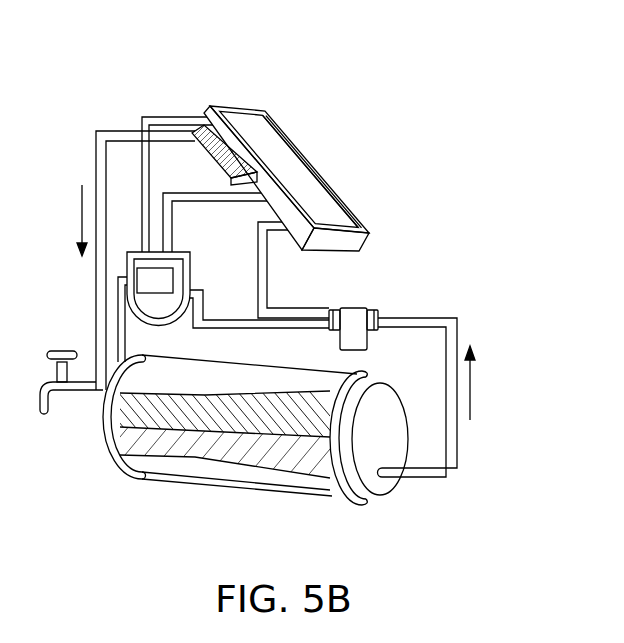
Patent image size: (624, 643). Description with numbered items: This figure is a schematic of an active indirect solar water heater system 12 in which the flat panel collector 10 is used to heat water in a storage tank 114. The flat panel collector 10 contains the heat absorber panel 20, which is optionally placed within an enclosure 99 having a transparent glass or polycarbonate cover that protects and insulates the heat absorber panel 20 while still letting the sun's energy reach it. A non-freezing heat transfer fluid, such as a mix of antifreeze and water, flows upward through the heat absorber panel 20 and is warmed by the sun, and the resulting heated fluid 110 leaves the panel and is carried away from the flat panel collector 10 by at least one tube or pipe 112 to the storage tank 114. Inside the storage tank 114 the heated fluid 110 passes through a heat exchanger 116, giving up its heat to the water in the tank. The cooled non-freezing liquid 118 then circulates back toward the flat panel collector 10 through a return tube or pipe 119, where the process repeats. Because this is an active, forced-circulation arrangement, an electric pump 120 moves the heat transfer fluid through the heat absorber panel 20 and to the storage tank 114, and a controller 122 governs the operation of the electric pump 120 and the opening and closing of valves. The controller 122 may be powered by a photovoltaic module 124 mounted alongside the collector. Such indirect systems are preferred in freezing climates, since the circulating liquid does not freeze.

The flat panel collector 10 is at (293, 125).
The solar water heater system 12 is at (332, 120).
The heat absorber panel 20 is at (328, 186).
The enclosure 99 is at (308, 157).
The heated fluid 110 is at (172, 135).
The tube or pipe 112 is at (108, 135).
The storage tank 114 is at (327, 488).
The heat exchanger 116 is at (252, 460).
The non-freezing liquid 118 is at (450, 427).
The return tube or pipe 119 is at (453, 337).
The electric pump 120 is at (355, 325).
The controller 122 is at (170, 265).
The photovoltaic module 124 is at (227, 150).